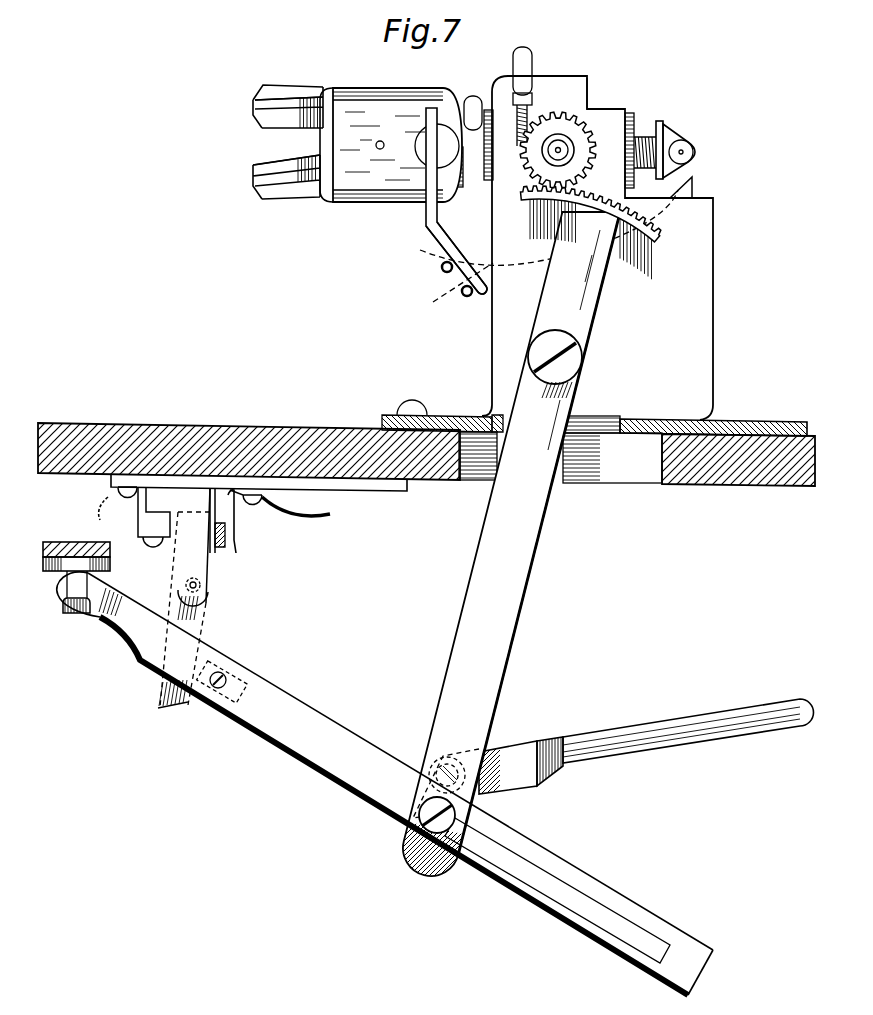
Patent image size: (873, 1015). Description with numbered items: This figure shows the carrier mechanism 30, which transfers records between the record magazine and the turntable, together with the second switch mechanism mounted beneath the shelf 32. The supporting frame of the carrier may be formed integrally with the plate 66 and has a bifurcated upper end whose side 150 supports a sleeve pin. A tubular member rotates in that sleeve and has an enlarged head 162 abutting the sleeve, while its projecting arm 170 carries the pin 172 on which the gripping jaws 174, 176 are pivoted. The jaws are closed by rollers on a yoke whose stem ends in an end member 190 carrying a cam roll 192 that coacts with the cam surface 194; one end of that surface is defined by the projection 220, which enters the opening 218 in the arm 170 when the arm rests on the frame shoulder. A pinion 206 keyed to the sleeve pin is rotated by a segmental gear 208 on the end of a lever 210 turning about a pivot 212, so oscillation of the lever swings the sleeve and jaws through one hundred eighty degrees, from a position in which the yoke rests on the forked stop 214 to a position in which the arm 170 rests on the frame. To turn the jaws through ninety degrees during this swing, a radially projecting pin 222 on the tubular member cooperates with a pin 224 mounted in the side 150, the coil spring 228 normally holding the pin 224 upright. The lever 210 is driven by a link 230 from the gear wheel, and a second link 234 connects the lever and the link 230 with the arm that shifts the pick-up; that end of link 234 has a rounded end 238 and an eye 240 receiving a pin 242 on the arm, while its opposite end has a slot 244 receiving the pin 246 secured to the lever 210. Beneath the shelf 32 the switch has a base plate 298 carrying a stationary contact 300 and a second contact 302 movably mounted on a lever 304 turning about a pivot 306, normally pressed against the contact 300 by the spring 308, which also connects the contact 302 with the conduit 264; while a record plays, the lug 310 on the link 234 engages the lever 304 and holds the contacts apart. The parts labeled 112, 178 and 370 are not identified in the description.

The carrier mechanism 30 is at (607, 108).
The shelf 32 is at (142, 432).
The plate 66 is at (778, 421).
The nut 112 is at (92, 542).
The side 150 is at (545, 84).
The enlarged head 162 is at (472, 187).
The projecting arm 170 is at (352, 182).
The pin 172 is at (380, 141).
The gripping jaw 174 is at (292, 88).
The gripping jaw 176 is at (287, 193).
The jaw faces 178 is at (262, 99).
The end member 190 is at (668, 130).
The cam roll 192 is at (697, 152).
The cam surface 194 is at (482, 300).
The pinion 206 is at (593, 130).
The segmental gear 208 is at (665, 232).
The lever 210 is at (582, 322).
The pivot 212 is at (575, 367).
The forked stop 214 is at (434, 238).
The opening 218 is at (436, 106).
The projection 220 is at (699, 184).
The radially projecting pin 222 is at (473, 95).
The cooperating pin 224 is at (531, 47).
The coil spring 228 is at (527, 117).
The link 230 is at (773, 708).
The second link 234 is at (310, 753).
The rounded end 238 is at (112, 616).
The eye 240 is at (88, 579).
The pin 242 is at (74, 614).
The slot 244 is at (570, 895).
The pin 246 is at (420, 825).
The conduit 264 is at (322, 513).
The base plate 298 is at (408, 492).
The stationary contact 300 is at (146, 524).
The second contact 302 is at (216, 525).
The lever 304 is at (193, 627).
The pivot 306 is at (203, 587).
The spring 308 is at (235, 551).
The lug 310 is at (227, 694).
The spring clip 370 is at (98, 509).